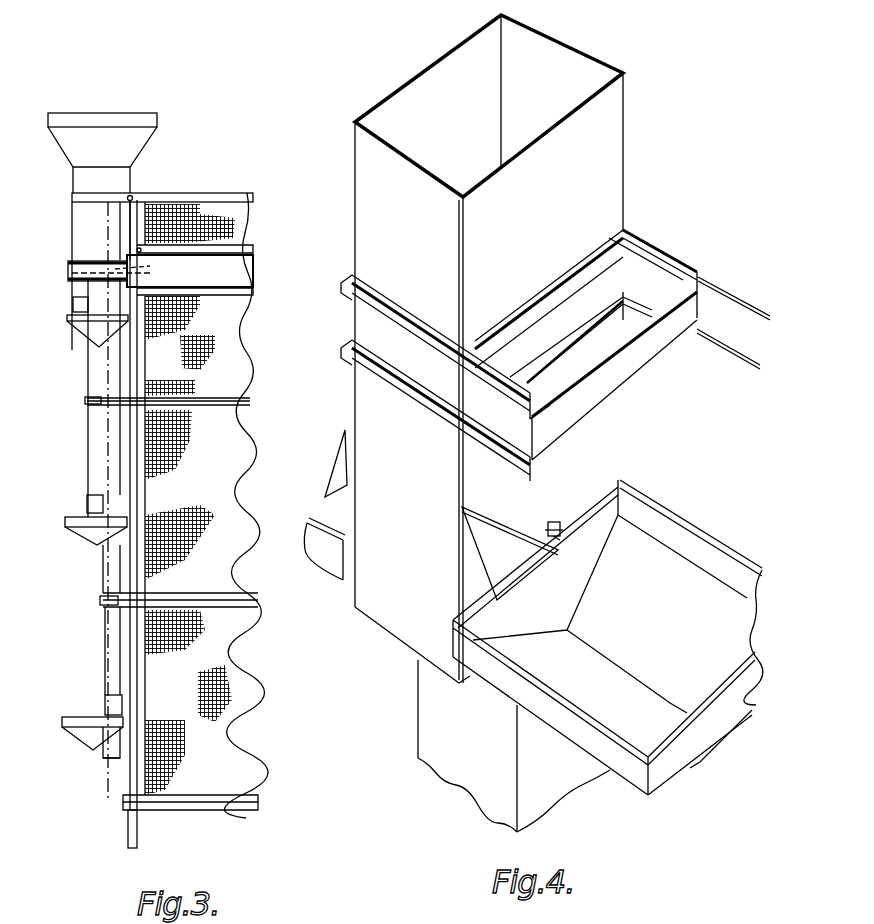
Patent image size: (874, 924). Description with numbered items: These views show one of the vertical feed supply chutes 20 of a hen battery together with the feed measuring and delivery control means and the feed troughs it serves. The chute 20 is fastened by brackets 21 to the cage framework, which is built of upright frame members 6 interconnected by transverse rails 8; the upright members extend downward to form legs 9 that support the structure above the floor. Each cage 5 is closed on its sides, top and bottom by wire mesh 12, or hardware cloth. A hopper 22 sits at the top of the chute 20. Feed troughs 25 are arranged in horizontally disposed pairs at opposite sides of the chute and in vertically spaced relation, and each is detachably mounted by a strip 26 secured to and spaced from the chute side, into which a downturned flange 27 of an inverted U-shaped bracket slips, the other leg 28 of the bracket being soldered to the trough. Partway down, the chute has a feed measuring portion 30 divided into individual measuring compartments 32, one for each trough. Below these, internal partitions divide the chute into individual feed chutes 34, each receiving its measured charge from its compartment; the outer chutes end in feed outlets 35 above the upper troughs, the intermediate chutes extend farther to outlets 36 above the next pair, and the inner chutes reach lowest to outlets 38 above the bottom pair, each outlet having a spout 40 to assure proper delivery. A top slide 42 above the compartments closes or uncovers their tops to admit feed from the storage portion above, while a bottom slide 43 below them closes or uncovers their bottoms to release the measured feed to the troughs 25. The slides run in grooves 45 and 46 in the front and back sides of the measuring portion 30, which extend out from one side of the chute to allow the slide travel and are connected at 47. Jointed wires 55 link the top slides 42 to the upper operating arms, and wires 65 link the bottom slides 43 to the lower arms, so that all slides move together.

In FIG. 3, the cage 5 is at (245, 370).
In FIG. 3, the upright frame member 6 is at (131, 638).
In FIG. 3, the transverse rail 8 is at (250, 408).
In FIG. 3, the leg 9 is at (130, 828).
In FIG. 3, the wire mesh 12 is at (245, 338).
In FIG. 3, the feed supply chute 20 is at (85, 222).
In FIG. 4, the feed supply chute 20 is at (398, 105).
In FIG. 3, the bracket 21 is at (133, 196).
In FIG. 3, the hopper 22 is at (113, 125).
In FIG. 3, the feed trough 25 is at (78, 535).
In FIG. 4, the feed trough 25 is at (313, 524).
In FIG. 4, the strip 26 is at (558, 537).
In FIG. 4, the downturned flange 27 is at (553, 522).
In FIG. 4, the leg of bracket 28 is at (622, 474).
In FIG. 3, the feed measuring portion 30 is at (68, 265).
In FIG. 4, the feed measuring portion 30 is at (352, 318).
In FIG. 3, the measuring compartment 32 is at (128, 268).
In FIG. 3, the individual feed chute 34 is at (75, 288).
In FIG. 4, the individual feed chute 34 is at (503, 480).
In FIG. 3, the feed outlet 35 is at (73, 303).
In FIG. 3, the feed outlet 36 is at (87, 497).
In FIG. 3, the feed outlet 38 is at (105, 700).
In FIG. 3, the spout 40 is at (78, 322).
In FIG. 4, the spout 40 is at (343, 470).
In FIG. 3, the top slide 42 is at (92, 262).
In FIG. 4, the top slide 42 is at (590, 270).
In FIG. 3, the bottom slide 43 is at (153, 281).
In FIG. 4, the bottom slide 43 is at (578, 336).
In FIG. 4, the groove 45 is at (531, 418).
In FIG. 4, the groove 46 is at (693, 330).
In FIG. 4, the connection 47 is at (627, 375).
In FIG. 4, the jointed wire 55 is at (748, 296).
In FIG. 4, the wire 65 is at (746, 348).